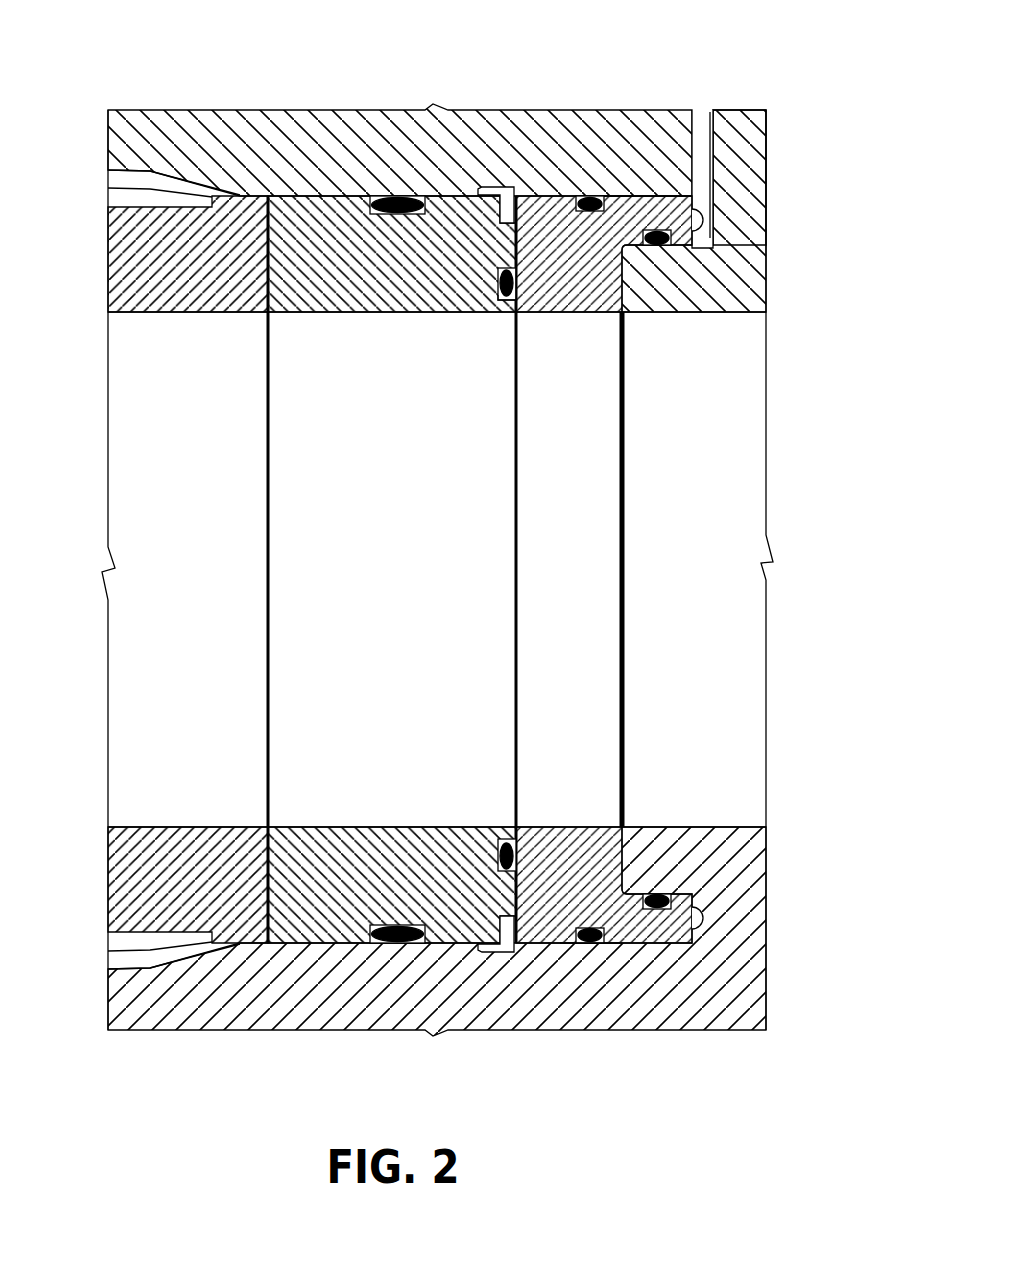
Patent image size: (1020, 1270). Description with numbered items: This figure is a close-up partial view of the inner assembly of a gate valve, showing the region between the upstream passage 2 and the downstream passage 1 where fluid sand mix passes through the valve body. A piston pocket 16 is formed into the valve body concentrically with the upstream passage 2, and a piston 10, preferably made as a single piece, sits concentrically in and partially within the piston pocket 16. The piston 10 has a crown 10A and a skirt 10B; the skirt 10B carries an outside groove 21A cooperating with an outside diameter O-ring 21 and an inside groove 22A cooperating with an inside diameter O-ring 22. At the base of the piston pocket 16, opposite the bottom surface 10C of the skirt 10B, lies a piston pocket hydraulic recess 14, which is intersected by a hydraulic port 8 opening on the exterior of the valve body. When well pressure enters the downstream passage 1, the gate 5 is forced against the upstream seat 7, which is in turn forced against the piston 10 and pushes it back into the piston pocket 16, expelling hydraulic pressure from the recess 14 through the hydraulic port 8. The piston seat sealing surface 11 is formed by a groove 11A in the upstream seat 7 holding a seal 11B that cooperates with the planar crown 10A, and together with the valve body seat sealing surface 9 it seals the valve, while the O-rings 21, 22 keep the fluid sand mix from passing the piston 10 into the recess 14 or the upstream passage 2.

The downstream passage 1 is at (130, 428).
The upstream passage 2 is at (722, 418).
The gate 5 is at (150, 223).
The upstream seat 7 is at (323, 253).
The hydraulic port 8 is at (702, 118).
The valve body seat sealing surface 9 is at (630, 278).
The piston 10 is at (568, 250).
The crown 10A is at (531, 196).
The skirt 10B is at (652, 196).
The bottom surface 10C is at (735, 162).
The piston seat sealing surface 11 is at (511, 283).
The groove 11A is at (501, 298).
The seal 11B is at (515, 287).
The piston pocket hydraulic recess 14 is at (703, 222).
The piston pocket 16 is at (628, 197).
The outside diameter (OD) seal or O-ring 21 is at (594, 945).
The outside groove 21A is at (581, 945).
The inside diameter (ID) seal or O-ring 22 is at (658, 893).
The inside groove 22A is at (674, 894).